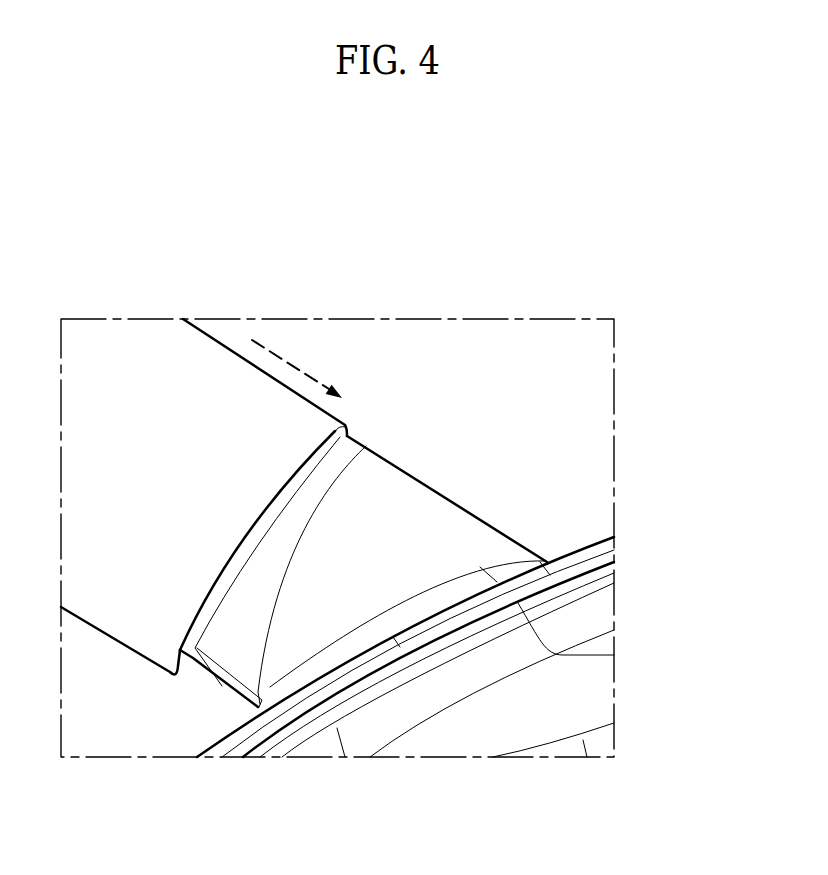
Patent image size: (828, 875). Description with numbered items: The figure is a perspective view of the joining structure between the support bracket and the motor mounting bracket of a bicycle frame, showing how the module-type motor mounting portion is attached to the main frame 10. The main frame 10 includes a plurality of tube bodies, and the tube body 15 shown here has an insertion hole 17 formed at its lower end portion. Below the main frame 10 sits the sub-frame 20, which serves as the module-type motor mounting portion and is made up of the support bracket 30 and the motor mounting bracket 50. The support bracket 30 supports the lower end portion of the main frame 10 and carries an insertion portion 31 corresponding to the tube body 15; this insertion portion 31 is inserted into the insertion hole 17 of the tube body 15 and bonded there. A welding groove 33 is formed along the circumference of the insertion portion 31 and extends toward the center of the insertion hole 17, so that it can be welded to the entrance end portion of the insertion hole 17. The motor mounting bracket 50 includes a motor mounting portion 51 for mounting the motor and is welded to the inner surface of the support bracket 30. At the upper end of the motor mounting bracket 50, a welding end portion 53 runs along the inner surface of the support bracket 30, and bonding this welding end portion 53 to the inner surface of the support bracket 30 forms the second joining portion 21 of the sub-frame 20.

The main frame 10 is at (228, 333).
The tube body 15 is at (140, 377).
The insertion hole 17 is at (295, 478).
The sub-frame 20 is at (475, 635).
The second joining portion 21 is at (614, 655).
The support bracket 30 is at (618, 543).
The insertion portion 31 is at (463, 520).
The welding groove 33 is at (358, 447).
The motor mounting bracket 50 is at (475, 659).
The motor mounting portion 51 is at (610, 697).
The welding end portion 53 is at (307, 720).